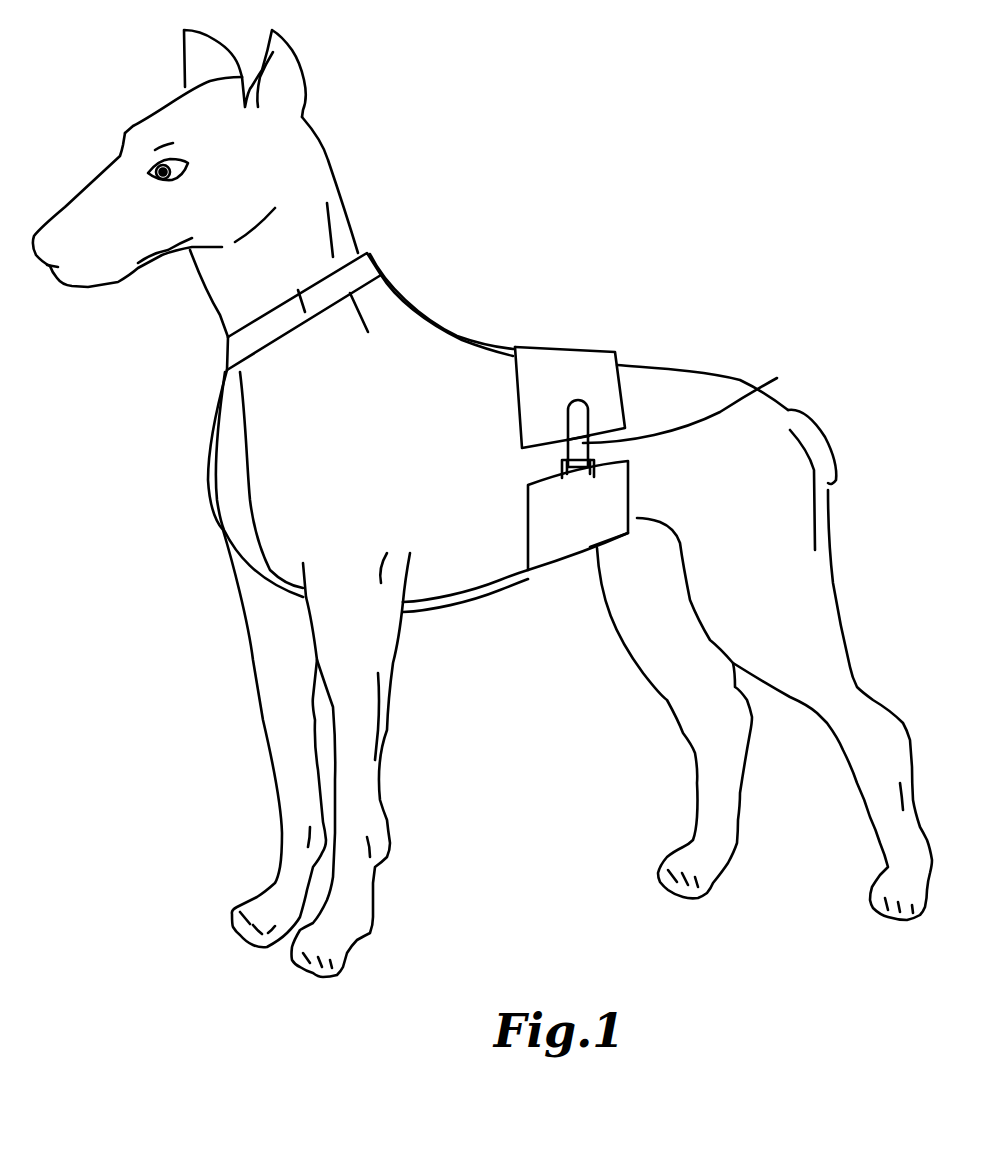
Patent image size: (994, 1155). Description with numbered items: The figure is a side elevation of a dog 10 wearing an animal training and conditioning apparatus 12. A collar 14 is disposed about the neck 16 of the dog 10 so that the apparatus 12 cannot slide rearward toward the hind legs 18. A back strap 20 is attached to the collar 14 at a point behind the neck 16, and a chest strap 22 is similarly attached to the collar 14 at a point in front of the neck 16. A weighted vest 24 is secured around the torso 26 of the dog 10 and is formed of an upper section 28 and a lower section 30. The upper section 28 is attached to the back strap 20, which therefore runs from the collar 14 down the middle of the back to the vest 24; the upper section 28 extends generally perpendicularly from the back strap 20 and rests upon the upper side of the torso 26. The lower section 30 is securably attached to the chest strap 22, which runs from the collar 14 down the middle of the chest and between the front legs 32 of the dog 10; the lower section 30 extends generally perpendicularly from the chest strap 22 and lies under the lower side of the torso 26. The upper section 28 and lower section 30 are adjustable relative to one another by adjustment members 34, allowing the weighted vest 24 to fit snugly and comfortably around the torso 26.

The dog 10 is at (384, 131).
The animal training and conditioning apparatus 12 is at (569, 429).
The collar 14 is at (368, 250).
The neck 16 is at (315, 200).
The hind legs 18 is at (813, 583).
The back strap 20 is at (445, 328).
The chest strap 22 is at (238, 505).
The weighted vest 24 is at (545, 350).
The torso 26 is at (648, 392).
The upper section 28 is at (567, 352).
The lower section 30 is at (563, 540).
The front legs 32 is at (260, 650).
The adjustment members 34 is at (760, 382).